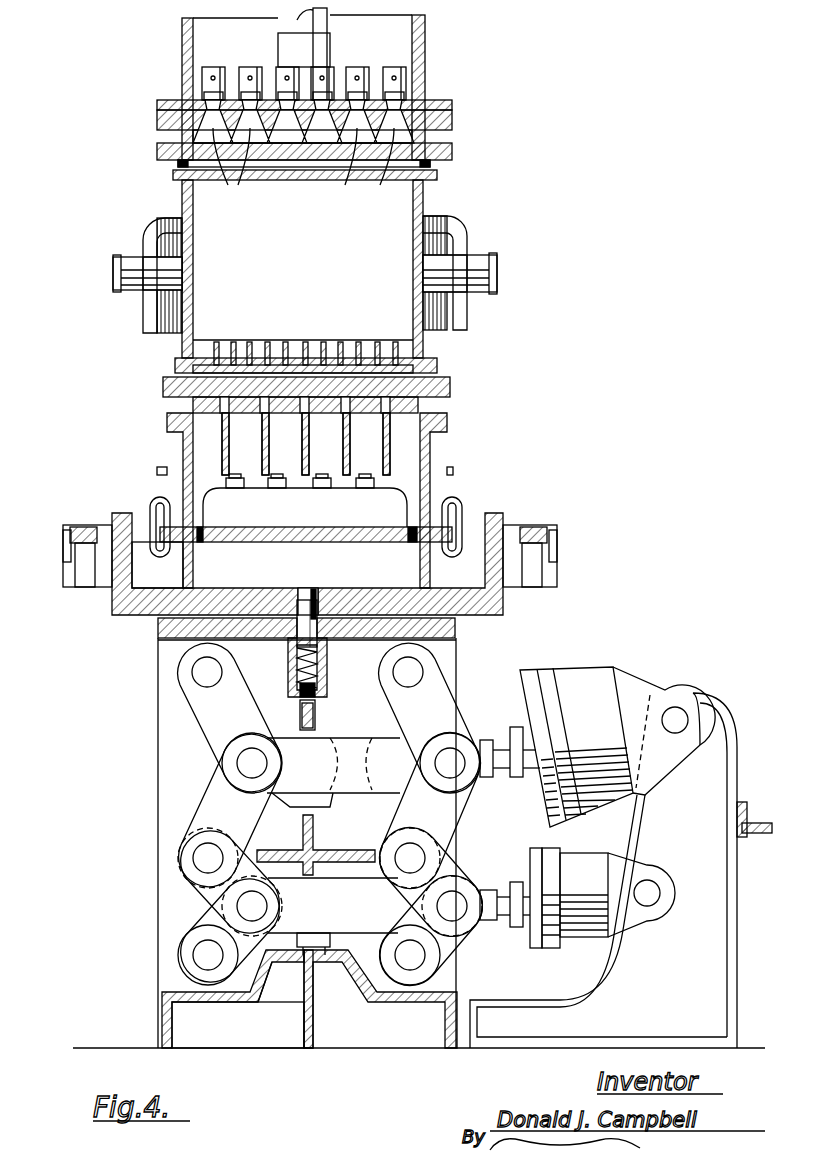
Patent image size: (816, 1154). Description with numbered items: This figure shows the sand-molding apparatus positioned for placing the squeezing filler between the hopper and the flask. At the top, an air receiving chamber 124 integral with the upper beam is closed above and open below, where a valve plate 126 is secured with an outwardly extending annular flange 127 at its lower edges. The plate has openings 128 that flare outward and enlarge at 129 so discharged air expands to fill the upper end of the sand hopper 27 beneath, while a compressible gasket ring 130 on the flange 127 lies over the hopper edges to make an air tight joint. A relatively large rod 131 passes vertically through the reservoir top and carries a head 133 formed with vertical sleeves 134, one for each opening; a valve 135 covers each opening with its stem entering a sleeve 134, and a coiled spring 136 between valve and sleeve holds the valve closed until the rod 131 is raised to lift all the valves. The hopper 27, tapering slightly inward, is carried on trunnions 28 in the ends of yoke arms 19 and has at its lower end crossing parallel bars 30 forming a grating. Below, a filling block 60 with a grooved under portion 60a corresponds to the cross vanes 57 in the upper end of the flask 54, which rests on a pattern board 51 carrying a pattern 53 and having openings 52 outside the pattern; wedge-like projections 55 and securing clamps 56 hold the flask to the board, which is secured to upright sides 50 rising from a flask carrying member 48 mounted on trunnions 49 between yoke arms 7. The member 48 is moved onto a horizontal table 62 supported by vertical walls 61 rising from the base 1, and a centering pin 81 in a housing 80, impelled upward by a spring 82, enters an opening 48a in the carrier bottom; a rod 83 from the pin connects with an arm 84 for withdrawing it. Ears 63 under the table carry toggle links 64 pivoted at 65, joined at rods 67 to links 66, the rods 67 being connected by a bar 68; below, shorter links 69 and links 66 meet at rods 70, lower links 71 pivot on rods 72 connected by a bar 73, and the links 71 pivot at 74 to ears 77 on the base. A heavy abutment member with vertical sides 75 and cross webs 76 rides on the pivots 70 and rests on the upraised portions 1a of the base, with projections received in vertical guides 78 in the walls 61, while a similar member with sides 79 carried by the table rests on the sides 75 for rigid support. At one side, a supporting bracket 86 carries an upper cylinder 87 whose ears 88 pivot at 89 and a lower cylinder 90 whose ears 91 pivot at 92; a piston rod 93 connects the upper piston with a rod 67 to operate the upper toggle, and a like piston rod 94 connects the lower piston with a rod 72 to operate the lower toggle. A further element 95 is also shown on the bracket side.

The base 1 is at (195, 1005).
The upraised portions of the base 1a is at (290, 965).
The yoke arms 7 is at (85, 580).
The yoke arms 19 is at (158, 230).
The sand hopper 27 is at (424, 214).
The trunnions 28 is at (113, 270).
The parallel bars 30 is at (218, 345).
The flask carrying member 48 is at (435, 600).
The opening 48a is at (308, 600).
The trunnions 49 is at (66, 545).
The upright sides 50 is at (194, 575).
The pattern board 51 is at (312, 542).
The openings 52 is at (203, 530).
The pattern 53 is at (303, 500).
The flask 54 is at (430, 450).
The wedge-like projections 55 is at (155, 527).
The securing clamps 56 is at (160, 551).
The cross vanes 57 is at (229, 438).
The filling block 60 is at (450, 385).
The under portion of filling block 60a is at (418, 404).
The vertical walls 61 is at (456, 660).
The table 62 is at (355, 640).
The ears 63 is at (180, 645).
The toggle links 64 is at (210, 720).
The pivot 65 is at (197, 680).
The toggle links 66 is at (212, 803).
The pivot rods 67 is at (255, 766).
The bar 68 is at (330, 755).
The links 69 is at (205, 888).
The rods 70 is at (205, 860).
The lower links 71 is at (192, 925).
The rods 72 is at (256, 907).
The bar 73 is at (328, 890).
The pivot 74 is at (205, 957).
The sides of abutment member 75 is at (318, 948).
The cross webs 76 is at (303, 855).
The ears 77 is at (180, 975).
The vertical guides 78 is at (314, 985).
The sides of upper abutment member 79 is at (352, 745).
The housing 80 is at (297, 668).
The centering pin 81 is at (316, 600).
The spring 82 is at (296, 648).
The rod 83 is at (315, 690).
The arm 84 is at (300, 716).
The supporting bracket 86 is at (712, 790).
The cylinder 87 is at (585, 685).
The ears 88 is at (640, 690).
The pivot 89 is at (678, 718).
The cylinder 90 is at (575, 868).
The ears 91 is at (622, 872).
The pivot 92 is at (660, 893).
The piston rod 93 is at (505, 778).
The piston rod 94 is at (512, 928).
The bracket 95 is at (754, 838).
The air receiving chamber 124 is at (425, 30).
The valve plate 126 is at (452, 124).
The annular flange 127 is at (452, 152).
The openings 128 is at (250, 140).
The flared portions 129 is at (190, 145).
The gasket ring 130 is at (430, 164).
The rod 131 is at (327, 16).
The head 133 is at (330, 40).
The vertical sleeves 134 is at (285, 70).
The valve 135 is at (160, 106).
The coiled spring 136 is at (204, 96).